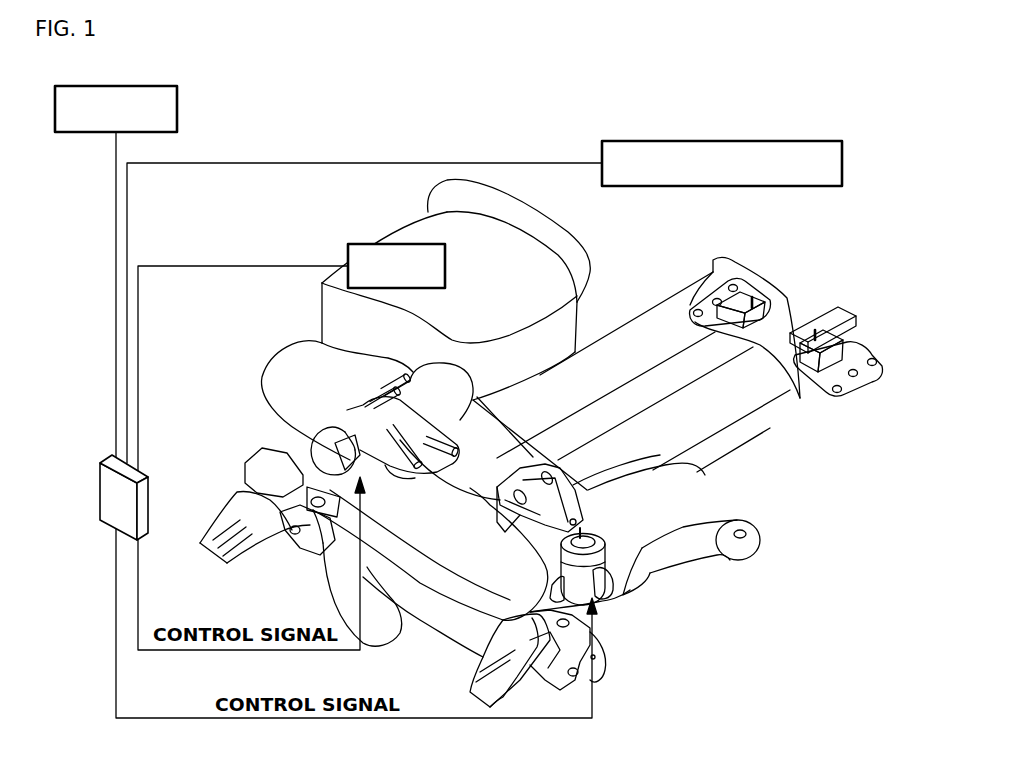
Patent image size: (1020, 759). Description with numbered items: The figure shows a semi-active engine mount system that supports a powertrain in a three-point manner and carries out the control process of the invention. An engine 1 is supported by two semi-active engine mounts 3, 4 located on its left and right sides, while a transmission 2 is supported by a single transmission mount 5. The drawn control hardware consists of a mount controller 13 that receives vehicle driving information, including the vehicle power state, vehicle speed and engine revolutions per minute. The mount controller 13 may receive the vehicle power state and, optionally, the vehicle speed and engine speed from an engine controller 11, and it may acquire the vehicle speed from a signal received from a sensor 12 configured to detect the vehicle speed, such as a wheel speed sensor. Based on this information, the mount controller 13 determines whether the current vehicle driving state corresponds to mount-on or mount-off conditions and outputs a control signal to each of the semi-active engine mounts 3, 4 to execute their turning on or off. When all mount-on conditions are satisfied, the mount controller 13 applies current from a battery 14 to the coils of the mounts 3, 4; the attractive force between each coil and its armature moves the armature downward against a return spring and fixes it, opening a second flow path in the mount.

The engine 1 is at (555, 273).
The transmission 2 is at (735, 445).
The semi-active engine mount 3 is at (325, 428).
The semi-active engine mount 4 is at (603, 575).
The transmission mount 5 is at (855, 387).
The engine controller 11 is at (843, 163).
The sensor 12 is at (362, 244).
The mount controller 13 is at (100, 492).
The battery 14 is at (178, 104).